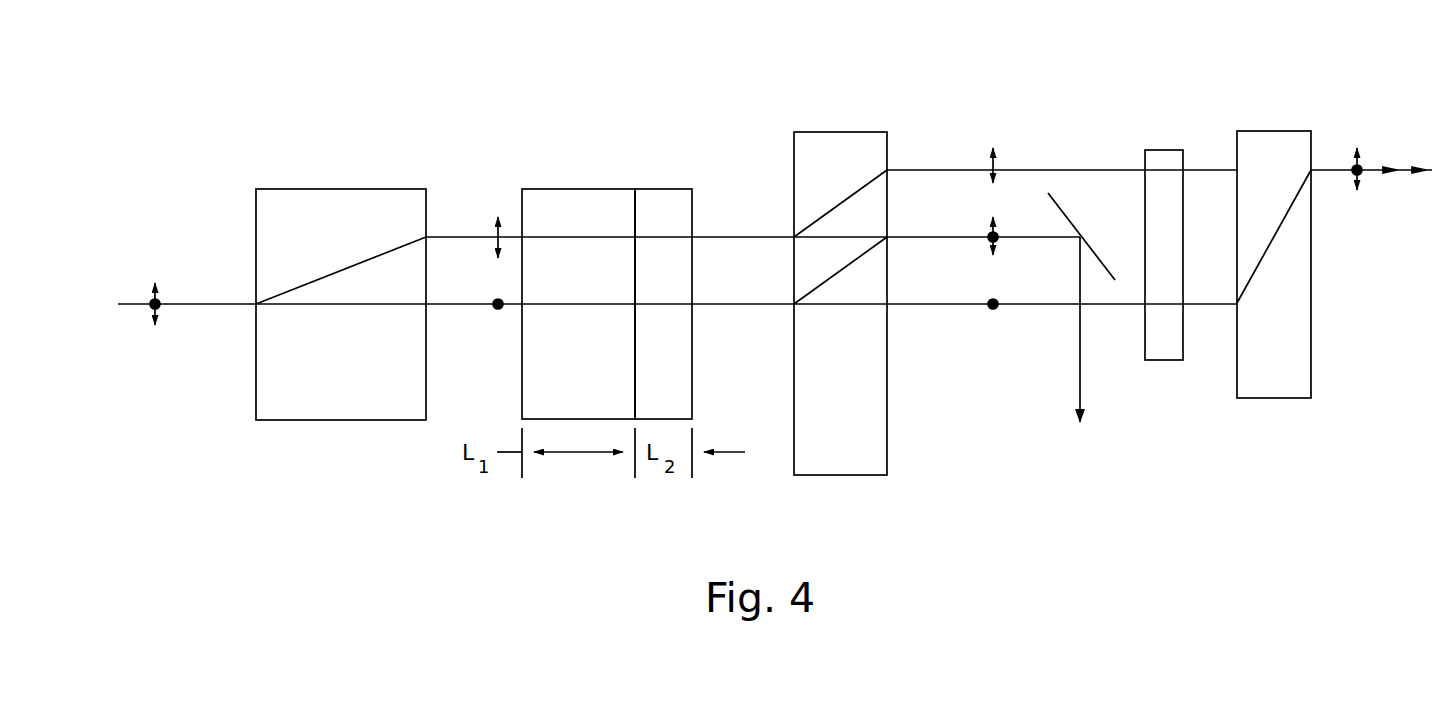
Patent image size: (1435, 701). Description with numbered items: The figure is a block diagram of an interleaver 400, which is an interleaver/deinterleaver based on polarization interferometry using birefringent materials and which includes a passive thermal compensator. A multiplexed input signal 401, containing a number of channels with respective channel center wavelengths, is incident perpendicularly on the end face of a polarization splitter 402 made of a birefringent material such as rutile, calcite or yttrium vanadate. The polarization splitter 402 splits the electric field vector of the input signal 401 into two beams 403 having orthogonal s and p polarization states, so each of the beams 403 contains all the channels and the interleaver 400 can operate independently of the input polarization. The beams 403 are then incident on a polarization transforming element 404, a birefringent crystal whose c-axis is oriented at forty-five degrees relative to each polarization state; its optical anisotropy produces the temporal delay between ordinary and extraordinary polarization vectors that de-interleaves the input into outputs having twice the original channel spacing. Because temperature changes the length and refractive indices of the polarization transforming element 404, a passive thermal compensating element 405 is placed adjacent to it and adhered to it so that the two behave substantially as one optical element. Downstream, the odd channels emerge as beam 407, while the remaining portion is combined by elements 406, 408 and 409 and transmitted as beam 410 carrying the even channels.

The interleaver 400 is at (238, 79).
The input signal 401 is at (152, 262).
The polarization splitter 402 is at (302, 189).
The beams 403 is at (460, 225).
The polarization transforming element 404 is at (555, 189).
The passive thermal compensating element 405 is at (669, 205).
The element 406 is at (837, 150).
The beam 407 is at (1081, 329).
The element 408 is at (1168, 142).
The element 409 is at (1280, 125).
The beam 410 is at (1355, 127).